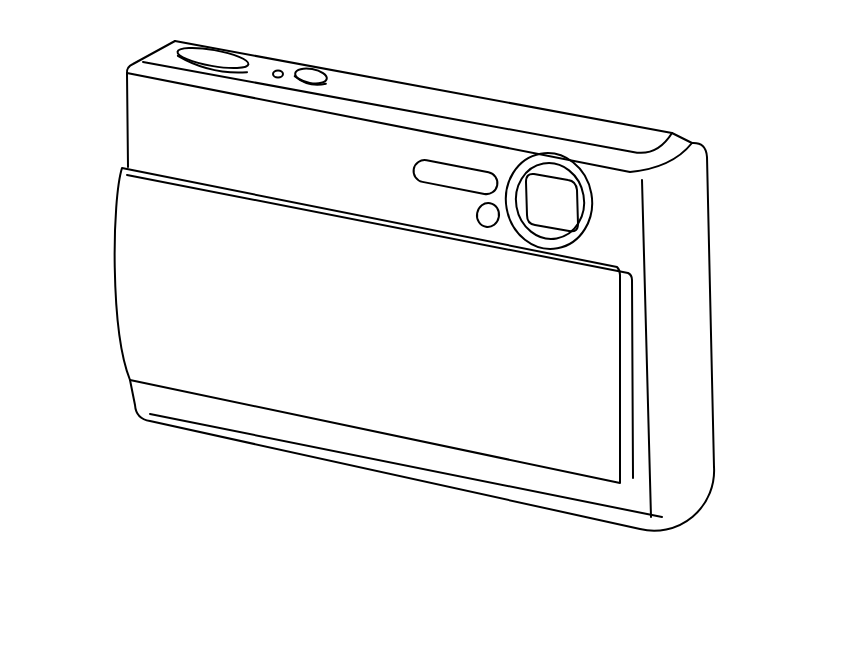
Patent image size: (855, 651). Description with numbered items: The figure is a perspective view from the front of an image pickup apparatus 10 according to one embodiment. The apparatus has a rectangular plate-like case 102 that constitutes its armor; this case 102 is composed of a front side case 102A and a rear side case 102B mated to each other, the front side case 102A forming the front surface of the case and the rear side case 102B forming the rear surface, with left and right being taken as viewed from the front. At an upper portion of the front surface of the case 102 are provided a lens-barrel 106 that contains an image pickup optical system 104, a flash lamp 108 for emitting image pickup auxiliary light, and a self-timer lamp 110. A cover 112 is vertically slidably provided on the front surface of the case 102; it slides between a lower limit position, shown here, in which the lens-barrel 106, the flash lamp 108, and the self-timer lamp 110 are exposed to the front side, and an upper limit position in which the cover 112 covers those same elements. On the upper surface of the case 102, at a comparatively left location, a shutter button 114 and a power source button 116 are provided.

The image pickup apparatus 10 is at (108, 137).
The case 102 is at (137, 415).
The front side case 102A is at (590, 492).
The rear side case 102B is at (720, 462).
The image pickup optical system 104 is at (557, 187).
The lens-barrel 106 is at (587, 243).
The flash lamp 108 is at (433, 173).
The self-timer lamp 110 is at (478, 225).
The cover 112 is at (150, 292).
The shutter button 114 is at (212, 55).
The power source button 116 is at (307, 78).